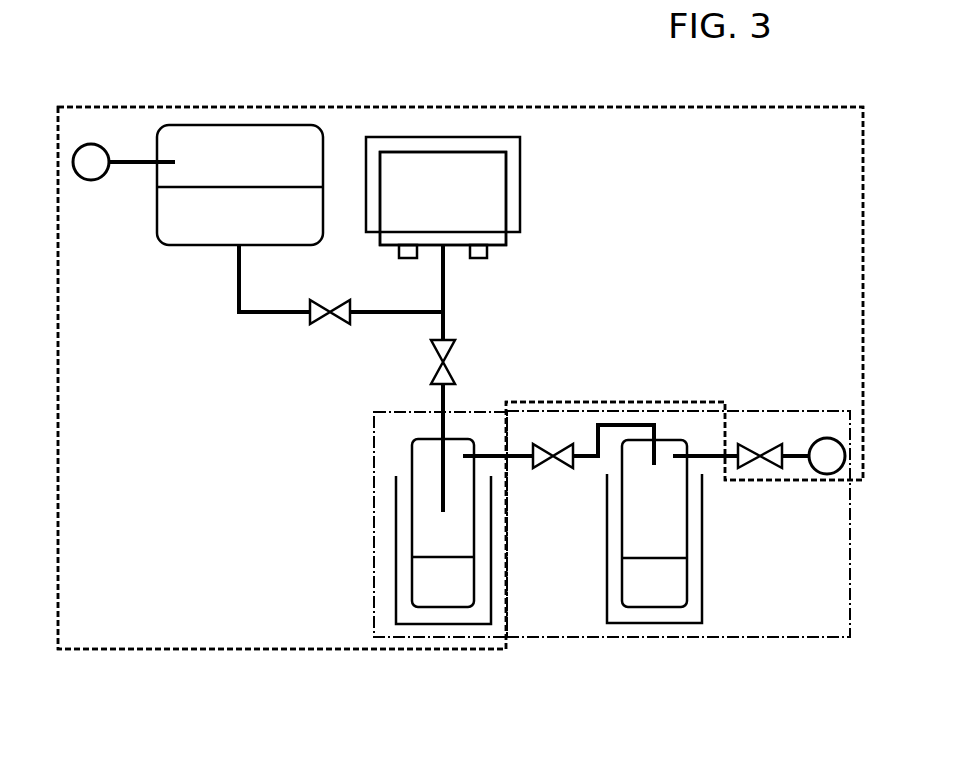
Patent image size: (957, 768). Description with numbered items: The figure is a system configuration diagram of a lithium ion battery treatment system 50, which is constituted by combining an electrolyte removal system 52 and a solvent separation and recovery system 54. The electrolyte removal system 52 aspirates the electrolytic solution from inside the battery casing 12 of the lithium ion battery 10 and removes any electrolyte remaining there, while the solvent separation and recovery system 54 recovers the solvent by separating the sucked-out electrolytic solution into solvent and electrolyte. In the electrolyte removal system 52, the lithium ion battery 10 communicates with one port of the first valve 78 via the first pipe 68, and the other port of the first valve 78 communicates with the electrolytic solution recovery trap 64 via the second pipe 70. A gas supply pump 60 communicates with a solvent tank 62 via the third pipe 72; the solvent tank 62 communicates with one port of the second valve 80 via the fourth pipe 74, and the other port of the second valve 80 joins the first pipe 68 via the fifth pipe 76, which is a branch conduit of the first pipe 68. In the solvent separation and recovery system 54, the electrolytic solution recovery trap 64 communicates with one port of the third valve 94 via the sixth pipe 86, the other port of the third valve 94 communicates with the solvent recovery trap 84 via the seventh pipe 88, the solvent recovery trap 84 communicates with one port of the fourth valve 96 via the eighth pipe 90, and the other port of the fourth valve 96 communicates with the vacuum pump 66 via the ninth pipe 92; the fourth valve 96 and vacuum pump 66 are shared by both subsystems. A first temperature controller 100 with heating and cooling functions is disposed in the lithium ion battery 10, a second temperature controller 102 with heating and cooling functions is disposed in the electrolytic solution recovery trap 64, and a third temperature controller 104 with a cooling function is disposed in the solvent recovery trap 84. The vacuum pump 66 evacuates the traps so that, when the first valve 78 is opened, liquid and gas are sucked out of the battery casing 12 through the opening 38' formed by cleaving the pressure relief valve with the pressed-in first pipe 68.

The lithium ion battery treatment system 50 is at (748, 92).
The electrolyte removal system 52 is at (461, 107).
The solvent separation and recovery system 54 is at (738, 639).
The gas supply pump 60 is at (89, 180).
The solvent tank 62 is at (247, 125).
The electrolytic solution recovery trap 64 is at (412, 440).
The vacuum pump 66 is at (816, 476).
The first pipe 68 is at (441, 290).
The second pipe 70 is at (440, 463).
The third pipe 72 is at (129, 160).
The fourth pipe 74 is at (238, 291).
The fifth pipe 76 is at (383, 316).
The first valve 78 is at (455, 368).
The second valve 80 is at (343, 304).
The solvent recovery trap 84 is at (673, 438).
The sixth pipe 86 is at (519, 460).
The seventh pipe 88 is at (610, 424).
The eighth pipe 90 is at (710, 460).
The ninth pipe 92 is at (791, 454).
The third valve 94 is at (565, 468).
The fourth valve 96 is at (749, 467).
The first temperature controller 100 is at (515, 165).
The lithium ion battery 10 is at (492, 205).
The battery casing 12 is at (443, 198).
The opening 38' is at (467, 278).
The second temperature controller 102 is at (403, 572).
The third temperature controller 104 is at (692, 584).